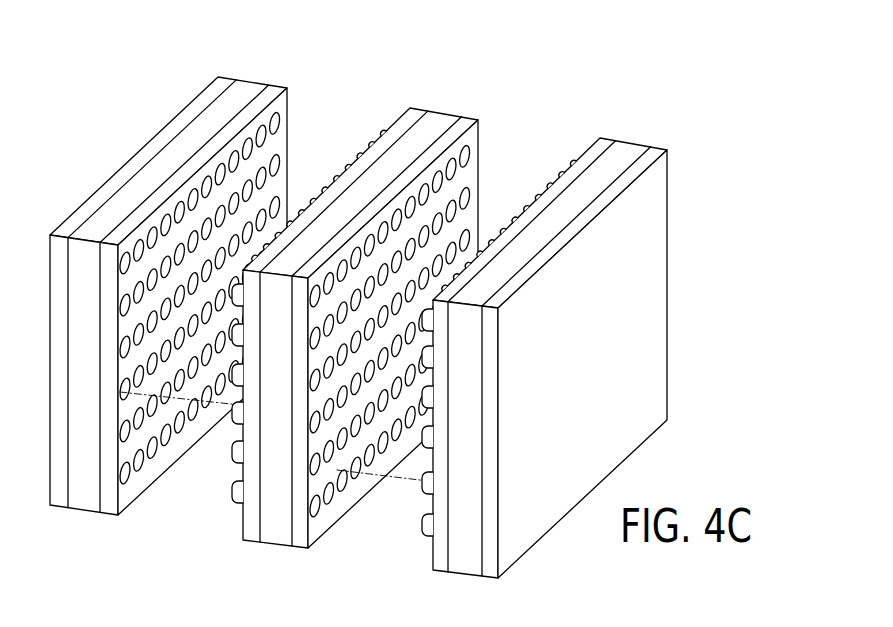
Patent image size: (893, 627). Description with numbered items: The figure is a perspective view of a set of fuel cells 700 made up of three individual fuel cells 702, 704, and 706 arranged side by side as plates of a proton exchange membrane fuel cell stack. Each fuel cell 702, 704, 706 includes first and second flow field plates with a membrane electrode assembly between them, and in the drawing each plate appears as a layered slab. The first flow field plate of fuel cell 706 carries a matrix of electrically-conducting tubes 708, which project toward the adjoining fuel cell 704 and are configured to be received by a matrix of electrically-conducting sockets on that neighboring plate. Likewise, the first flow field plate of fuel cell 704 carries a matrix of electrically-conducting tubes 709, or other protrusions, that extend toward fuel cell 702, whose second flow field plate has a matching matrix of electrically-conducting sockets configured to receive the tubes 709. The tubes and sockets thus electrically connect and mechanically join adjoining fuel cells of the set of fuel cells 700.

The set of fuel cells 700 is at (417, 301).
The fuel cell 702 is at (296, 118).
The fuel cell 704 is at (343, 323).
The fuel cell 706 is at (533, 334).
The matrix of electrically-conducting tubes 708 is at (417, 526).
The matrix of electrically-conducting tubes 709 is at (228, 495).